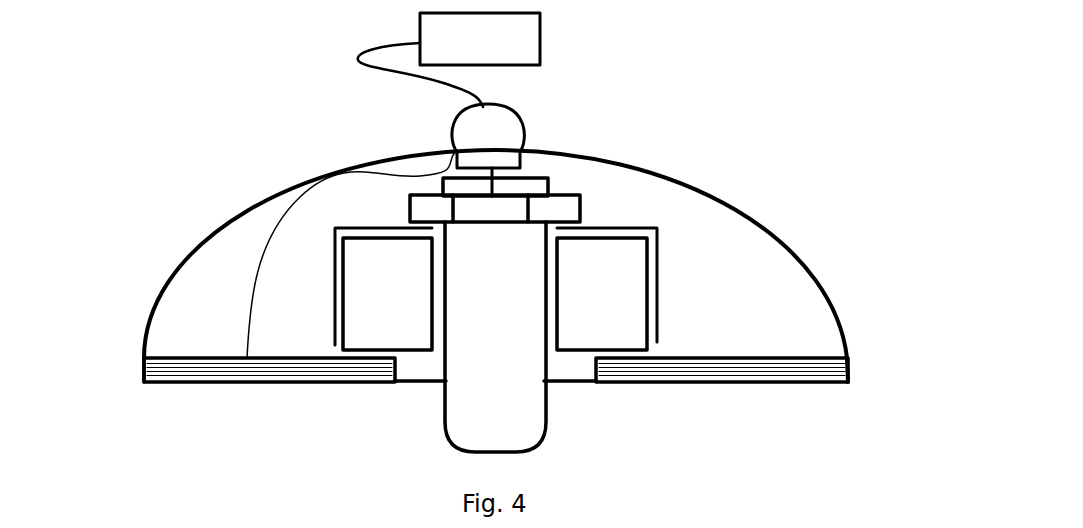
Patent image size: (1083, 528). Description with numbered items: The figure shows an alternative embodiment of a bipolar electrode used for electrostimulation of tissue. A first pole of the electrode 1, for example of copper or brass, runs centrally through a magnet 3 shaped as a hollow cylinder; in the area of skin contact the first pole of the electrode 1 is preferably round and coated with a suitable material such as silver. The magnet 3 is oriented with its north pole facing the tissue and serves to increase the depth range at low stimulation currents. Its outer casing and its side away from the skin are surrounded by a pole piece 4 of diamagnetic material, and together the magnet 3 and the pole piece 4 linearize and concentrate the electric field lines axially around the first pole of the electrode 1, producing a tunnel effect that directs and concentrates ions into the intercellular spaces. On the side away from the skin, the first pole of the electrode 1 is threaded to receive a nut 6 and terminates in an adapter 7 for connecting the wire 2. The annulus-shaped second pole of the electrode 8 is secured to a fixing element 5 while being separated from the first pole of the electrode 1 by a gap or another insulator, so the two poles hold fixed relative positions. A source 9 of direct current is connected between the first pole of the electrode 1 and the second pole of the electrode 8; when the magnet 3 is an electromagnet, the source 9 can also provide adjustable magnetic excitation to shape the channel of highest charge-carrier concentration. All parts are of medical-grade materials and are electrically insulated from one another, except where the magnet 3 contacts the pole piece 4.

The first pole of the electrode 1 is at (503, 418).
The wire 2 is at (243, 338).
The magnet 3 is at (385, 307).
The pole piece 4 is at (345, 227).
The fixing element 5 is at (343, 182).
The nut 6 is at (430, 210).
The adapter 7 is at (467, 133).
The second pole of the electrode 8 is at (743, 372).
The source 9 is at (452, 50).